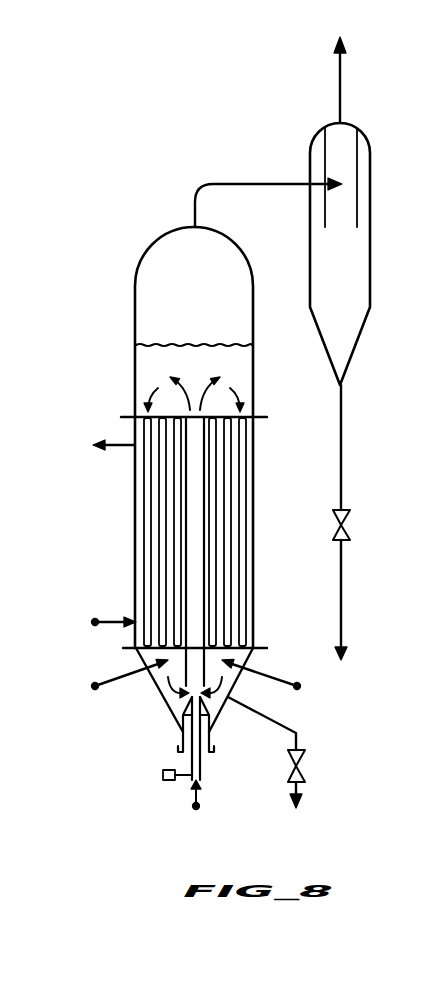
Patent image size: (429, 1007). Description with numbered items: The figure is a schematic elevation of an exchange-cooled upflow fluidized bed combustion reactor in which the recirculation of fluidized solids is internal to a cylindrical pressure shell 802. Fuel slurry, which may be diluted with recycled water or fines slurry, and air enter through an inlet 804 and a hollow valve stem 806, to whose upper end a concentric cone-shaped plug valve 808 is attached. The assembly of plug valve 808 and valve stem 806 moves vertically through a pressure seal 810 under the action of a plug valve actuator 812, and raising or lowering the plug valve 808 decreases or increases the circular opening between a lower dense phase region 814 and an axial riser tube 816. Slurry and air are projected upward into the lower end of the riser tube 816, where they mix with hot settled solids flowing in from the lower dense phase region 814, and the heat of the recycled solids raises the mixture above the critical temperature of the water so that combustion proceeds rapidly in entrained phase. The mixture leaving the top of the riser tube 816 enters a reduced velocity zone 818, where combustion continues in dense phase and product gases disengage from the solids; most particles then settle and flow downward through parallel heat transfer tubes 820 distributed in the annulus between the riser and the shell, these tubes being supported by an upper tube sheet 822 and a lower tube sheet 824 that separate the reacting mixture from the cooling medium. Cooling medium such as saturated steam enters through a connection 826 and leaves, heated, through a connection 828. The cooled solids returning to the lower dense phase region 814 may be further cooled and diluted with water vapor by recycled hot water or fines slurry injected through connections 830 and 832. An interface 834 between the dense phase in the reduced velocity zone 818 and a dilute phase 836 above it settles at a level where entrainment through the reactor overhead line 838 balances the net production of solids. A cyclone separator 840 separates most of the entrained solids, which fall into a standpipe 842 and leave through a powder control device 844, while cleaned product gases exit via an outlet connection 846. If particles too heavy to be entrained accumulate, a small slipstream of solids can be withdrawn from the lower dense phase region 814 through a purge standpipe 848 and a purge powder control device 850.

The cylindrical pressure shell 802 is at (135, 281).
The inlet 804 is at (199, 805).
The hollow valve stem 806 is at (201, 775).
The cone-shaped plug valve 808 is at (183, 712).
The pressure seal 810 is at (211, 739).
The plug valve actuator 812 is at (163, 775).
The lower dense phase region 814 is at (218, 667).
The axial riser tube 816 is at (165, 668).
The reduced velocity zone 818 is at (225, 357).
The heat transfer tubes 820 is at (147, 507).
The upper tube sheet 822 is at (257, 415).
The lower tube sheet 824 is at (248, 647).
The coolant inlet connection 826 is at (115, 622).
The coolant outlet connection 828 is at (115, 445).
The injection nozzle connection 830 is at (130, 671).
The injection nozzle connection 832 is at (265, 671).
The interface 834 is at (178, 345).
The dilute phase 836 is at (180, 260).
The reactor overhead line 838 is at (238, 183).
The cyclone separator 840 is at (310, 270).
The standpipe 842 is at (342, 433).
The powder control device 844 is at (352, 518).
The outlet connection 846 is at (338, 90).
The purge standpipe 848 is at (288, 726).
The purge powder control device 850 is at (305, 768).